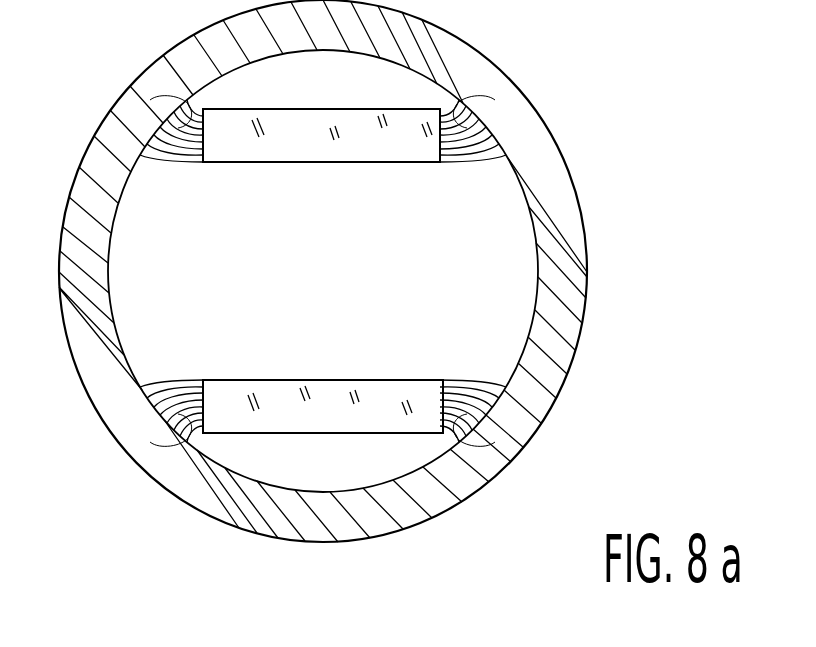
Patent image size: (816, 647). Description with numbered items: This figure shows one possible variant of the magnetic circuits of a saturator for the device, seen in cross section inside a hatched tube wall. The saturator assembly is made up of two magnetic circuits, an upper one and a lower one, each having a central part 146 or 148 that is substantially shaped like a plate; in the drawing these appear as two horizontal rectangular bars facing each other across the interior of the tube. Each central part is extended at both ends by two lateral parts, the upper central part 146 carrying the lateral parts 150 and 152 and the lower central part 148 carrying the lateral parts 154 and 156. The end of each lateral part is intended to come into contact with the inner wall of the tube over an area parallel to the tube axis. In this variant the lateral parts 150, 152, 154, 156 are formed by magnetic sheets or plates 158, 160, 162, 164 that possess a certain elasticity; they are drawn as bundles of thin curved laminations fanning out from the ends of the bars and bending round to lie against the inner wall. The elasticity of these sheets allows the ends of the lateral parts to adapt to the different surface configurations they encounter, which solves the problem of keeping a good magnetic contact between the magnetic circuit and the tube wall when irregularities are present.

The central part 146 is at (306, 150).
The central part 148 is at (315, 378).
The lateral part 150 is at (167, 168).
The lateral part 152 is at (484, 168).
The lateral part 154 is at (172, 377).
The lateral part 156 is at (491, 375).
The magnetic sheet 158 is at (180, 110).
The magnetic sheet 160 is at (466, 112).
The magnetic sheet 162 is at (180, 432).
The magnetic sheet 164 is at (466, 430).